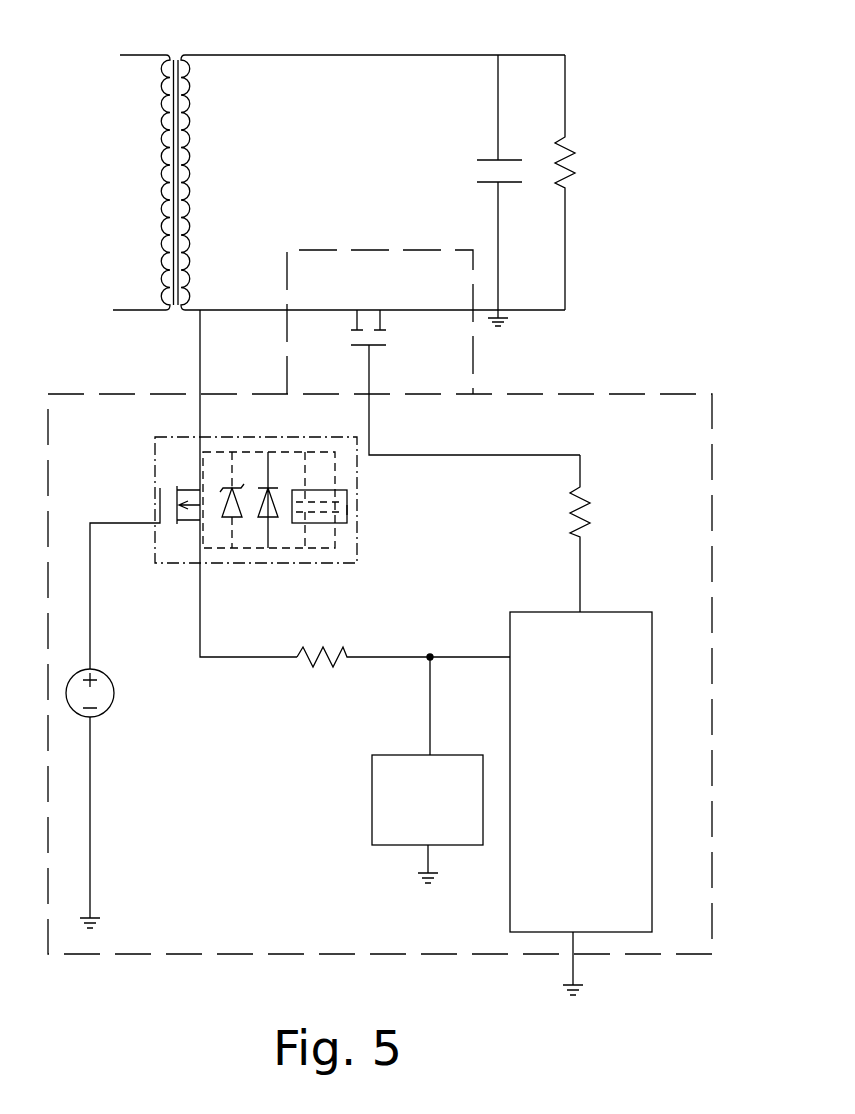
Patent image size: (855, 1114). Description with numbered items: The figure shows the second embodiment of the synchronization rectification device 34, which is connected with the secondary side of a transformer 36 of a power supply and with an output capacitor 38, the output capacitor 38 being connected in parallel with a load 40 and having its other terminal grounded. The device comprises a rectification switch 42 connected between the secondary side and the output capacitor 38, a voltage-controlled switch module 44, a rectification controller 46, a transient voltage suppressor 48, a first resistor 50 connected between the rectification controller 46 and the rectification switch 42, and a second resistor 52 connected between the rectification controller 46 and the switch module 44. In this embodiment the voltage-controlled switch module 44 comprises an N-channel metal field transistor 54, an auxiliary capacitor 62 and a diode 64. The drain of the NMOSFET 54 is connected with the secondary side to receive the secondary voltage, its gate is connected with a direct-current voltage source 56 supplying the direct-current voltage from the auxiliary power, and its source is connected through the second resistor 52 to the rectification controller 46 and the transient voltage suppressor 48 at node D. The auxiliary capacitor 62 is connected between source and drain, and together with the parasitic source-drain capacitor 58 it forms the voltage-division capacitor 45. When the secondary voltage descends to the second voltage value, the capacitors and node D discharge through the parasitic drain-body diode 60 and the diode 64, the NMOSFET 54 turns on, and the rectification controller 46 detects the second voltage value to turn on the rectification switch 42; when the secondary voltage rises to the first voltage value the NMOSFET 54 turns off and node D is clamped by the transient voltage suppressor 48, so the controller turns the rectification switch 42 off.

The synchronization rectification device 34 is at (635, 393).
The transformer 36 is at (165, 53).
The output capacitor 38 is at (487, 183).
The load 40 is at (577, 173).
The rectification switch 42 is at (370, 322).
The voltage-controlled switch module 44 is at (305, 437).
The voltage-division capacitor 45 is at (350, 497).
The rectification controller 46 is at (652, 680).
The transient voltage suppressor 48 is at (372, 795).
The first resistor 50 is at (590, 505).
The second resistor 52 is at (338, 648).
The N-channel metal field transistor 54 is at (157, 500).
The direct-current voltage source 56 is at (112, 683).
The parasitic source-drain capacitor 58 is at (312, 520).
The parasitic drain-body diode 60 is at (238, 522).
The auxiliary capacitor 62 is at (348, 512).
The diode 64 is at (272, 522).